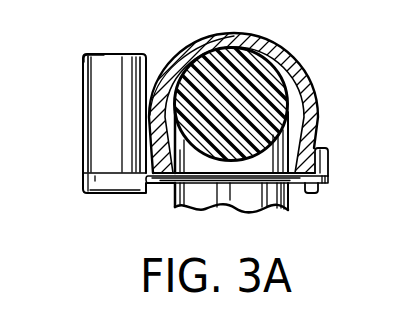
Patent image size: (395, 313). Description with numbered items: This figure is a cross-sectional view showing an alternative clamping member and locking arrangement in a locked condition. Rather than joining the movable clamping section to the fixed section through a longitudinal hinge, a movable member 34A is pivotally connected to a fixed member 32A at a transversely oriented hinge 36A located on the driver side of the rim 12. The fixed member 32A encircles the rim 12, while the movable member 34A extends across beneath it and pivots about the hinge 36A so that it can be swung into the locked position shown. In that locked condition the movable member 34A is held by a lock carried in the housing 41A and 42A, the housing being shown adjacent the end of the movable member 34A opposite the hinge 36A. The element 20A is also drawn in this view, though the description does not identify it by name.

The rim 12 is at (273, 49).
The cylindrical member 20A is at (127, 54).
The fixed member 32A is at (287, 57).
The movable member 34A is at (164, 188).
The hinge 36A is at (314, 190).
The housing 41A is at (95, 53).
The housing 42A is at (84, 193).